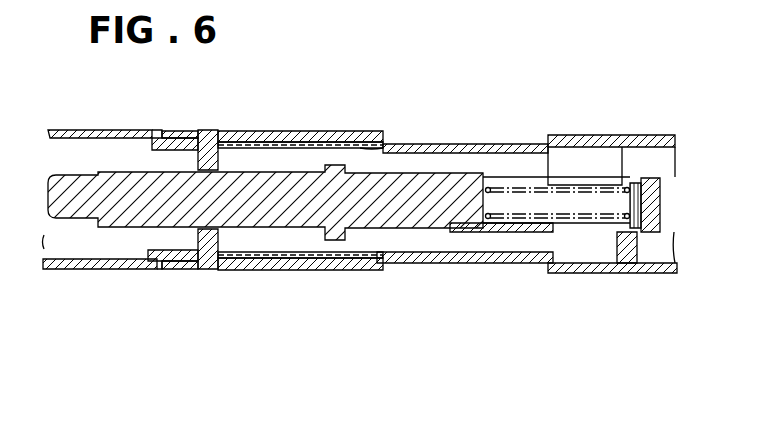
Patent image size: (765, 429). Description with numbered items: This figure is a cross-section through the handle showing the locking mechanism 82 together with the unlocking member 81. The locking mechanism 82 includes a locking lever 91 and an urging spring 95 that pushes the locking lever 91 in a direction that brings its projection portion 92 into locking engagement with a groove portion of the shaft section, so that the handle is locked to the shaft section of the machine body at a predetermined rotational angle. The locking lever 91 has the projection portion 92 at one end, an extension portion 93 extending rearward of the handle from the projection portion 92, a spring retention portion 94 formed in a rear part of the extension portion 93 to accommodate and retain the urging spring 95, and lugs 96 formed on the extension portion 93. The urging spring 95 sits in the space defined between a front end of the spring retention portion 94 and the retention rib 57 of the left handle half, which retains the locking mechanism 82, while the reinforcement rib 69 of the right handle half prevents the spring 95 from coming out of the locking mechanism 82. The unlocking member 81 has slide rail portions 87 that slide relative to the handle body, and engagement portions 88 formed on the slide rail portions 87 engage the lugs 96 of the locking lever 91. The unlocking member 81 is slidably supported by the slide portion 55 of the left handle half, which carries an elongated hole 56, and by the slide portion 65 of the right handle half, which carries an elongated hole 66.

The projection portion 92 is at (70, 130).
The engagement portions 88 is at (250, 133).
The slide rail portions 87 is at (300, 132).
The lugs 96 is at (345, 143).
The elongated hole 66 is at (367, 143).
The slide portion 65 is at (400, 145).
The spring retention portion 94 is at (538, 181).
The reinforcement rib 69 is at (583, 165).
The retention rib 57 is at (635, 176).
The unlocking member 81 is at (175, 268).
The slide portion 55 is at (410, 258).
The elongated hole 56 is at (367, 266).
The extension portion 93 is at (432, 217).
The locking lever 91 is at (450, 205).
The locking mechanism 82 is at (508, 232).
The urging spring 95 is at (577, 219).